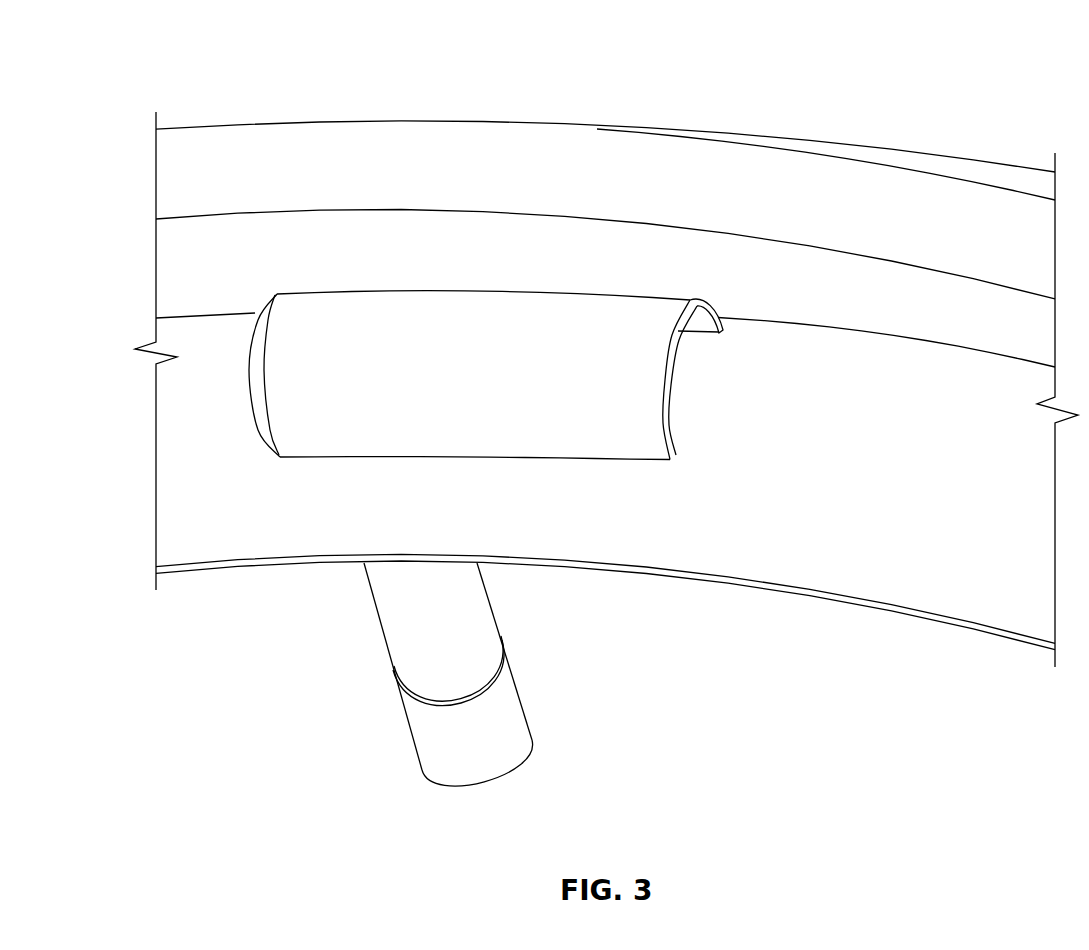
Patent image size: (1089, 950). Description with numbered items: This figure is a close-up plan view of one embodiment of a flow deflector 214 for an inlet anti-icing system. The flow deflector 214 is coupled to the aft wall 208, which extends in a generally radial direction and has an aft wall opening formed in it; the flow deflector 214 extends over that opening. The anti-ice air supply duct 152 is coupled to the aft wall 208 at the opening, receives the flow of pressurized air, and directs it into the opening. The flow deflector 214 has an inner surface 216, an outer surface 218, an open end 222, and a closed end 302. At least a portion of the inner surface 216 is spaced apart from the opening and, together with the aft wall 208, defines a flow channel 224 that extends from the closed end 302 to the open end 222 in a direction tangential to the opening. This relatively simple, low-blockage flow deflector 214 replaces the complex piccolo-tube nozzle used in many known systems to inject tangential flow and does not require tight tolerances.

The anti-ice air supply duct 152 is at (520, 687).
The aft wall 208 is at (892, 575).
The flow deflector 214 is at (473, 291).
The inner surface 216 is at (700, 333).
The outer surface 218 is at (583, 340).
The open end 222 is at (683, 406).
The flow channel 224 is at (675, 365).
The closed end 302 is at (250, 382).